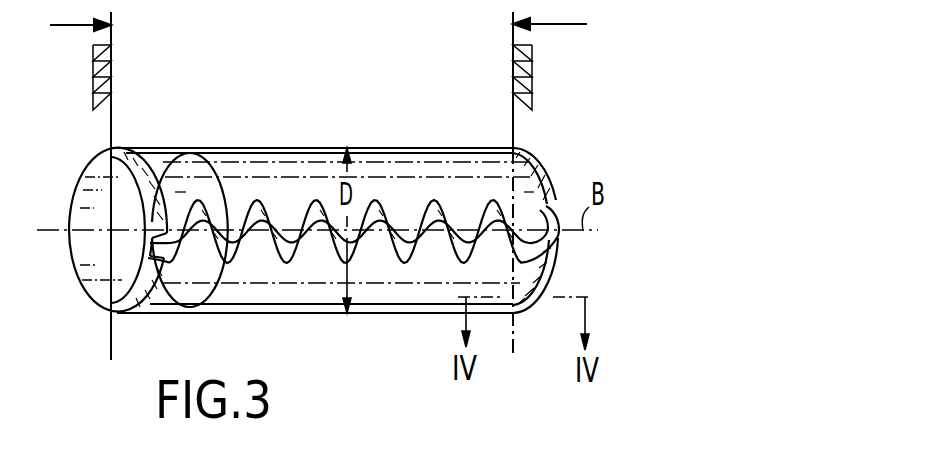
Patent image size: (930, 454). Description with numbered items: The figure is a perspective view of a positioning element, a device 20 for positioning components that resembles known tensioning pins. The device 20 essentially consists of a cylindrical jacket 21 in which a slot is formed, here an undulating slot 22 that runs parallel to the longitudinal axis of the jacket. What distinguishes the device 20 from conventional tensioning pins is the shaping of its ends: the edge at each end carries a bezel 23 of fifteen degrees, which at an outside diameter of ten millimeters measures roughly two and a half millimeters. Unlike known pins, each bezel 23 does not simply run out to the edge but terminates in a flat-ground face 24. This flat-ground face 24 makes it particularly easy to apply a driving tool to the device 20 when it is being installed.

The device 20 is at (250, 148).
The cylindrical jacket 21 is at (447, 175).
The undulating slot 22 is at (382, 200).
The bezel 23 is at (152, 175).
The flat-ground face 24 is at (97, 303).